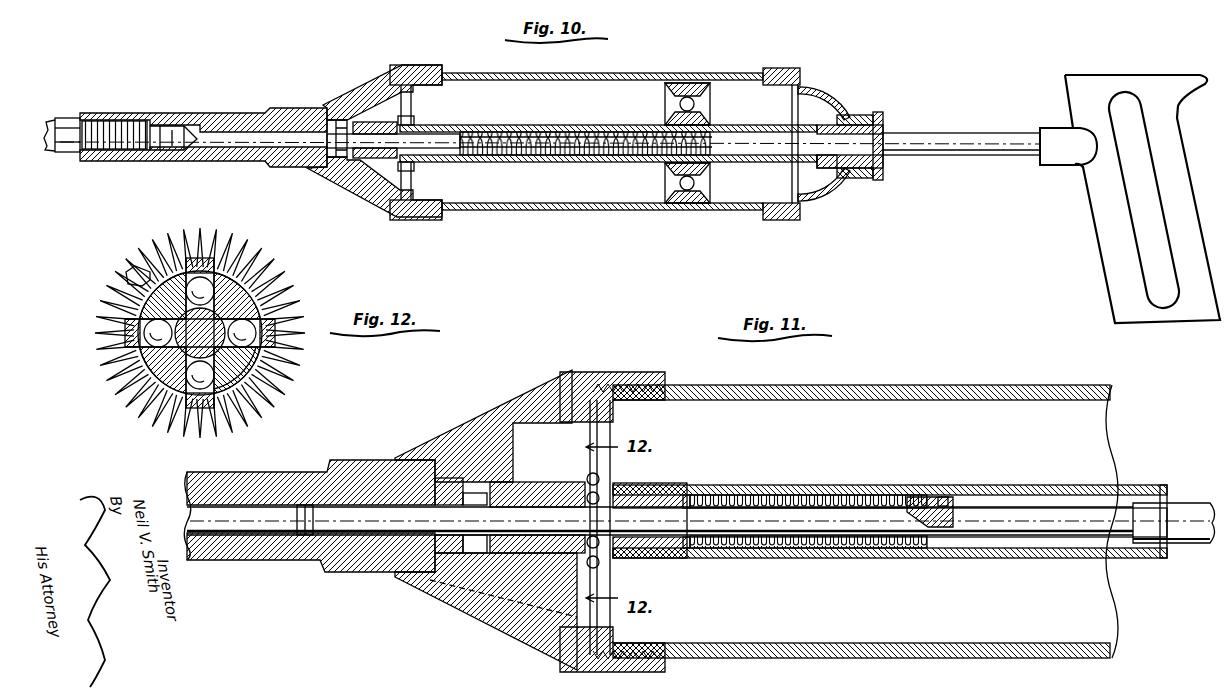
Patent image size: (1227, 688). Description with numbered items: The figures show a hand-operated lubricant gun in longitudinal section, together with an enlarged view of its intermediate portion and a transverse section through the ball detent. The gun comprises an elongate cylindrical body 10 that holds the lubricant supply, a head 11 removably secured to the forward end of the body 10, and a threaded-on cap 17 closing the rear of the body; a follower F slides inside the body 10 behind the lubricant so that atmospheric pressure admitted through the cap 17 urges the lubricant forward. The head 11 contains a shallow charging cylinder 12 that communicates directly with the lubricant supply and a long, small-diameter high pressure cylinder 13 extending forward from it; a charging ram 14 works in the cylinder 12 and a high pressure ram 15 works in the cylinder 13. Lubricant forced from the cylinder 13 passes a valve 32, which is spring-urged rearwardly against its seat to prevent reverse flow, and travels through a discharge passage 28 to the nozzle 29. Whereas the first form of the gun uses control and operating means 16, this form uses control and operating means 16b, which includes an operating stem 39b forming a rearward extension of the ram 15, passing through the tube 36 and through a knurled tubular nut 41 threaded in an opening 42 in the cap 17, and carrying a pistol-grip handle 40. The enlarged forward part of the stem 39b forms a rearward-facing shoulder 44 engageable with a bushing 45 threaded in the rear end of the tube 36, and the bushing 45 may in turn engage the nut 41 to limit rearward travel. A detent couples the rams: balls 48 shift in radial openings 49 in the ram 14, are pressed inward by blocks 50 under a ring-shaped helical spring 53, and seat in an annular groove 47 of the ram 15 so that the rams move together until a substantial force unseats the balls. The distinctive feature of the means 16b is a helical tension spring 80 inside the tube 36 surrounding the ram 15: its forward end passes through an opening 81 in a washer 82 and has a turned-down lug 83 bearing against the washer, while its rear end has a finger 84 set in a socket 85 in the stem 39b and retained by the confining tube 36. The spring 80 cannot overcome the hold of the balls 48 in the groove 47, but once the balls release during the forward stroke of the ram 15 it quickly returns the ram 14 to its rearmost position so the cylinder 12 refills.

In FIG. 10, the body 10 is at (625, 73).
In FIG. 11, the body 10 is at (852, 386).
In FIG. 10, the head 11 is at (355, 196).
In FIG. 11, the head 11 is at (520, 396).
In FIG. 10, the charging cylinder 12 is at (335, 120).
In FIG. 11, the charging cylinder 12 is at (447, 485).
In FIG. 10, the high pressure cylinder 13 is at (280, 112).
In FIG. 11, the high pressure cylinder 13 is at (355, 505).
In FIG. 10, the charging ram 14 is at (376, 120).
In FIG. 12, the charging ram 14 is at (220, 316).
In FIG. 11, the charging ram 14 is at (522, 482).
In FIG. 10, the high pressure ram 15 is at (428, 150).
In FIG. 12, the high pressure ram 15 is at (248, 306).
In FIG. 11, the high pressure ram 15 is at (268, 525).
In FIG. 11, the control and operating means 16 is at (586, 472).
In FIG. 10, the control and operating means 16b is at (414, 114).
In FIG. 10, the cap 17 is at (825, 96).
In FIG. 10, the discharge passage 28 is at (130, 121).
In FIG. 10, the discharge nozzle 29 is at (52, 118).
In FIG. 10, the valve 32 is at (190, 128).
In FIG. 10, the tube 36 is at (540, 126).
In FIG. 11, the tube 36 is at (773, 486).
In FIG. 10, the operating stem 39b is at (955, 133).
In FIG. 11, the operating stem 39b is at (1027, 487).
In FIG. 10, the operating handle 40 is at (1095, 203).
In FIG. 10, the tubular nut 41 is at (883, 166).
In FIG. 10, the opening 42 is at (855, 118).
In FIG. 10, the annular shoulder 44 is at (822, 168).
In FIG. 11, the annular shoulder 44 is at (1133, 514).
In FIG. 10, the tubular bushing 45 is at (822, 125).
In FIG. 11, the annular groove 47 is at (300, 535).
In FIG. 12, the balls 48 is at (274, 368).
In FIG. 12, the radial openings 49 is at (241, 333).
In FIG. 12, the blocks 50 is at (230, 333).
In FIG. 12, the helical spring 53 is at (199, 332).
In FIG. 10, the spring 80 is at (572, 132).
In FIG. 11, the spring 80 is at (740, 495).
In FIG. 11, the opening 81 is at (703, 495).
In FIG. 11, the washer 82 is at (693, 548).
In FIG. 11, the lug 83 is at (678, 495).
In FIG. 11, the finger 84 is at (945, 498).
In FIG. 11, the socket 85 is at (955, 512).
In FIG. 10, the follower F is at (689, 83).